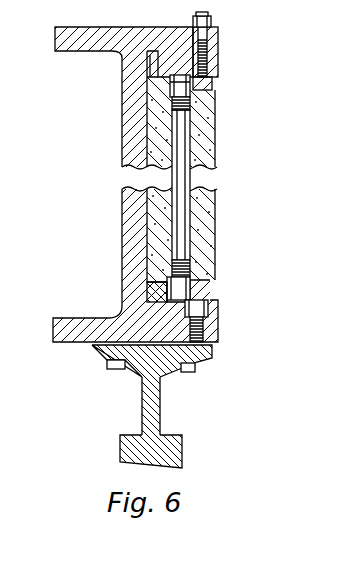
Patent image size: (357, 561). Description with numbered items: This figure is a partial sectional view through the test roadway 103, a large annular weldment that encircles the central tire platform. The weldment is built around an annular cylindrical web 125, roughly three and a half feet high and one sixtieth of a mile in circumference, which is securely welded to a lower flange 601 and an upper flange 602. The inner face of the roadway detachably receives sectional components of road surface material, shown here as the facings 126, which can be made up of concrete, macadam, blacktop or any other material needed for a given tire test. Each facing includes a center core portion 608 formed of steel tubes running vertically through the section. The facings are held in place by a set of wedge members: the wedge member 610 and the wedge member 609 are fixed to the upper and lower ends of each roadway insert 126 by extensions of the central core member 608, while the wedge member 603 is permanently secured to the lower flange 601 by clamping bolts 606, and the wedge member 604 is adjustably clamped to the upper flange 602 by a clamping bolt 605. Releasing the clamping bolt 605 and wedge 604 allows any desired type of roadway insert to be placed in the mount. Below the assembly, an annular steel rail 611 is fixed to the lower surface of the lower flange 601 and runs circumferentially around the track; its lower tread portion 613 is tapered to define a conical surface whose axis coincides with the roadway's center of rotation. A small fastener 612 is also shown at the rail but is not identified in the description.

The roadway 103 is at (178, 240).
The annular cylindrical web 125 is at (121, 168).
The facings 126 is at (216, 233).
The lower flange 601 is at (84, 289).
The upper flange 602 is at (78, 52).
The wedge member 603 is at (216, 309).
The wedge member 604 is at (219, 59).
The clamping bolt 605 is at (213, 22).
The clamping bolts 606 is at (219, 330).
The center core portion 608 is at (216, 200).
The wedge member 609 is at (216, 287).
The wedge member 610 is at (214, 84).
The annular steel rail 611 is at (142, 388).
The rail fastening nut 612 is at (107, 363).
The lower tread portion 613 is at (131, 466).